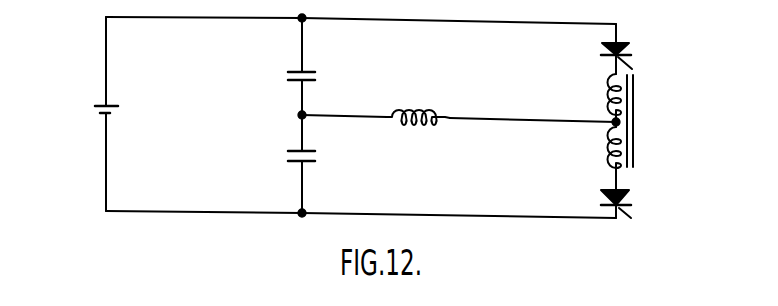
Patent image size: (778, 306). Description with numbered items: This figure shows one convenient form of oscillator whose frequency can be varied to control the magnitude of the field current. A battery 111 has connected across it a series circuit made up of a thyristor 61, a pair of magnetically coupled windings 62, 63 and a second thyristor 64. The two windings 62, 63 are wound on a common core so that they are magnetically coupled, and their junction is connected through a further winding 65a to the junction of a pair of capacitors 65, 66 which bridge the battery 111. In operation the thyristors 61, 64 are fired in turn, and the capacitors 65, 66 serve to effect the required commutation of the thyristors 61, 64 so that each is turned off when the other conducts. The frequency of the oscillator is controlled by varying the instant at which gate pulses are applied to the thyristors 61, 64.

The battery 111 is at (95, 113).
The capacitor 65 is at (316, 78).
The capacitor 66 is at (316, 152).
The winding 65a is at (437, 103).
The magnetically coupled winding 62 is at (605, 98).
The magnetically coupled winding 63 is at (605, 132).
The thyristor 61 is at (622, 52).
The thyristor 64 is at (628, 195).